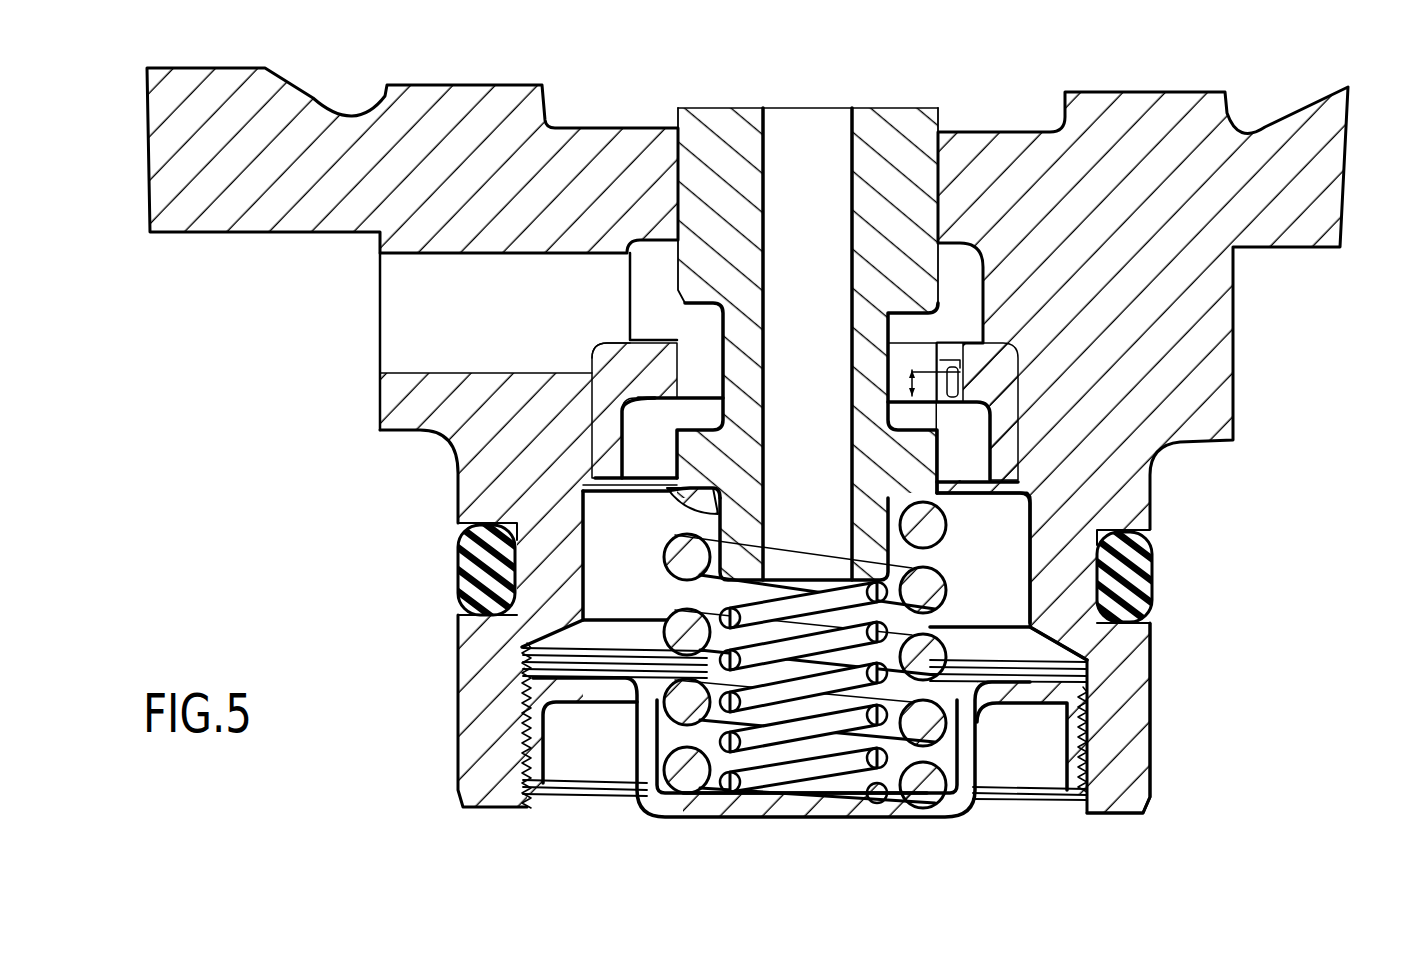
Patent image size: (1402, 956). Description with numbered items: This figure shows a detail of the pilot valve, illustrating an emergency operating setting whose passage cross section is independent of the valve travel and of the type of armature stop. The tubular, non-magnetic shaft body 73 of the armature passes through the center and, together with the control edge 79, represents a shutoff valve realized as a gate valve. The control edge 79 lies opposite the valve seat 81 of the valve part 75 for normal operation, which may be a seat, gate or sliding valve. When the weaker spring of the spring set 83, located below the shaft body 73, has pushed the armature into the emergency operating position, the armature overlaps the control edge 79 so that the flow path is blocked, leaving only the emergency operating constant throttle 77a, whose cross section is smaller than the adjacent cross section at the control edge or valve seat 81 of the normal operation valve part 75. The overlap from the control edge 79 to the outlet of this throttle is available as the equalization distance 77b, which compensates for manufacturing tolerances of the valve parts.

The shaft body 73 is at (893, 192).
The valve part for normal operation 75 is at (945, 327).
The emergency operating constant throttle 77a is at (956, 414).
The equalization distance 77b is at (912, 383).
The control edge 79 is at (660, 404).
The valve seat 81 is at (670, 338).
The spring set 83 is at (752, 822).